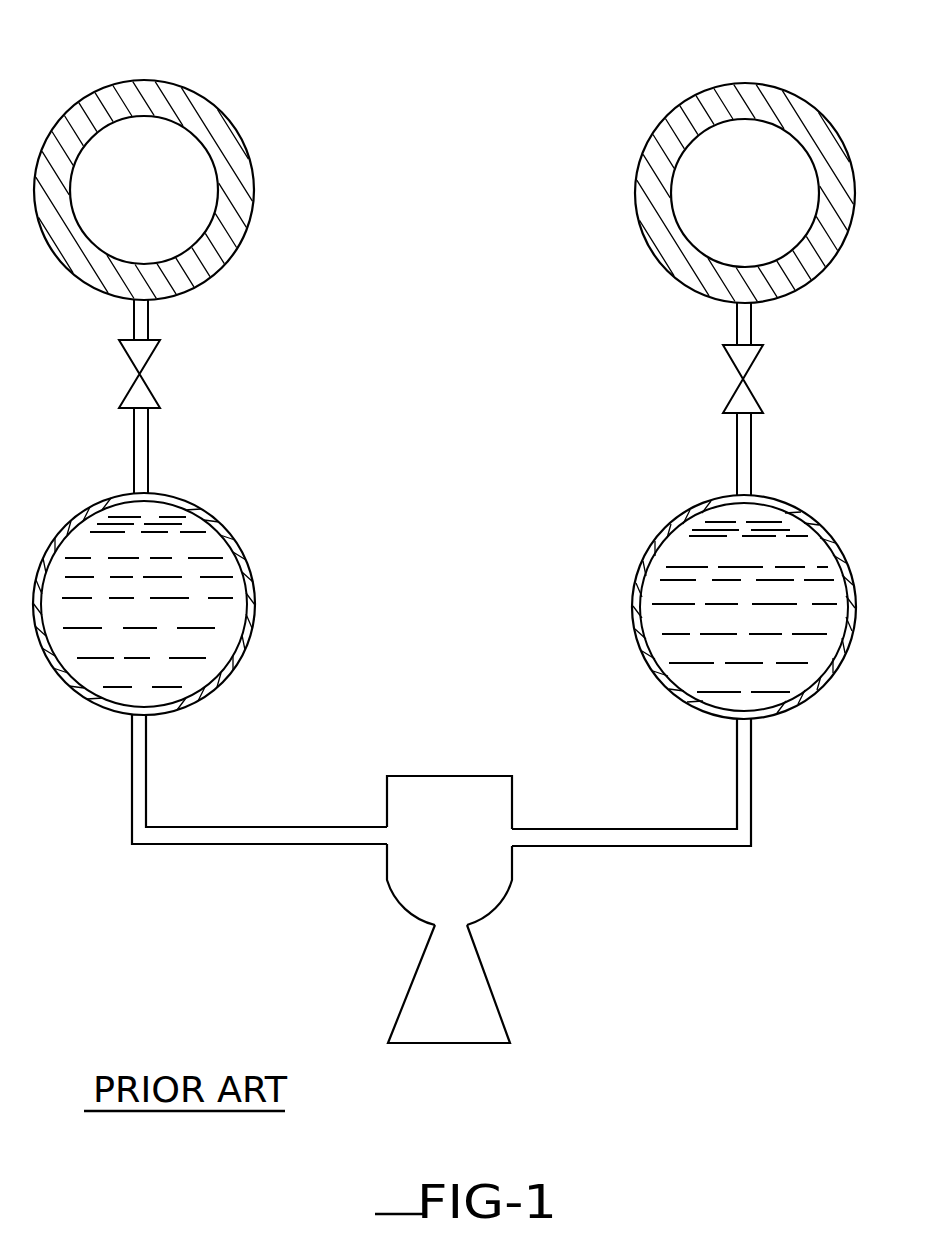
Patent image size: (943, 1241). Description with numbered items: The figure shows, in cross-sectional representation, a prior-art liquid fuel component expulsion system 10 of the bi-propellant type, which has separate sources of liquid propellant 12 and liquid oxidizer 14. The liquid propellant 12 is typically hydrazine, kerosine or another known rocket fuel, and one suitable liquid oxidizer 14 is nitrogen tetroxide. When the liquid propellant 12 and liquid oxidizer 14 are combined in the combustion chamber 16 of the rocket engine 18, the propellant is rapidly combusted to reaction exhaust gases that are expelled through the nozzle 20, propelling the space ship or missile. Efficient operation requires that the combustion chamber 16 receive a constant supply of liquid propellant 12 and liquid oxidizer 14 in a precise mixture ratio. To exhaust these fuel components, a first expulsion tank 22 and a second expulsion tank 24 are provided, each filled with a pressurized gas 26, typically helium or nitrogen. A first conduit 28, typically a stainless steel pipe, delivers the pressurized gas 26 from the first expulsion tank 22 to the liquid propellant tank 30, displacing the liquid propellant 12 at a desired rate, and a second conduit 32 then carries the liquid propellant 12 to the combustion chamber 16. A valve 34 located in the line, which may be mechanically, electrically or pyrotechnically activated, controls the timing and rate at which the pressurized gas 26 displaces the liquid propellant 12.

The liquid fuel component expulsion system 10 is at (524, 62).
The liquid propellant 12 is at (189, 604).
The liquid oxidizer 14 is at (650, 594).
The combustion chamber 16 is at (463, 793).
The rocket engine 18 is at (368, 894).
The nozzle 20 is at (493, 1012).
The first expulsion tank 22 is at (233, 142).
The second expulsion tank 24 is at (680, 117).
The pressurized gas 26 is at (187, 228).
The first conduit 28 is at (146, 452).
The liquid propellant tank 30 is at (243, 550).
The second conduit 32 is at (253, 835).
The valve 34 is at (137, 402).